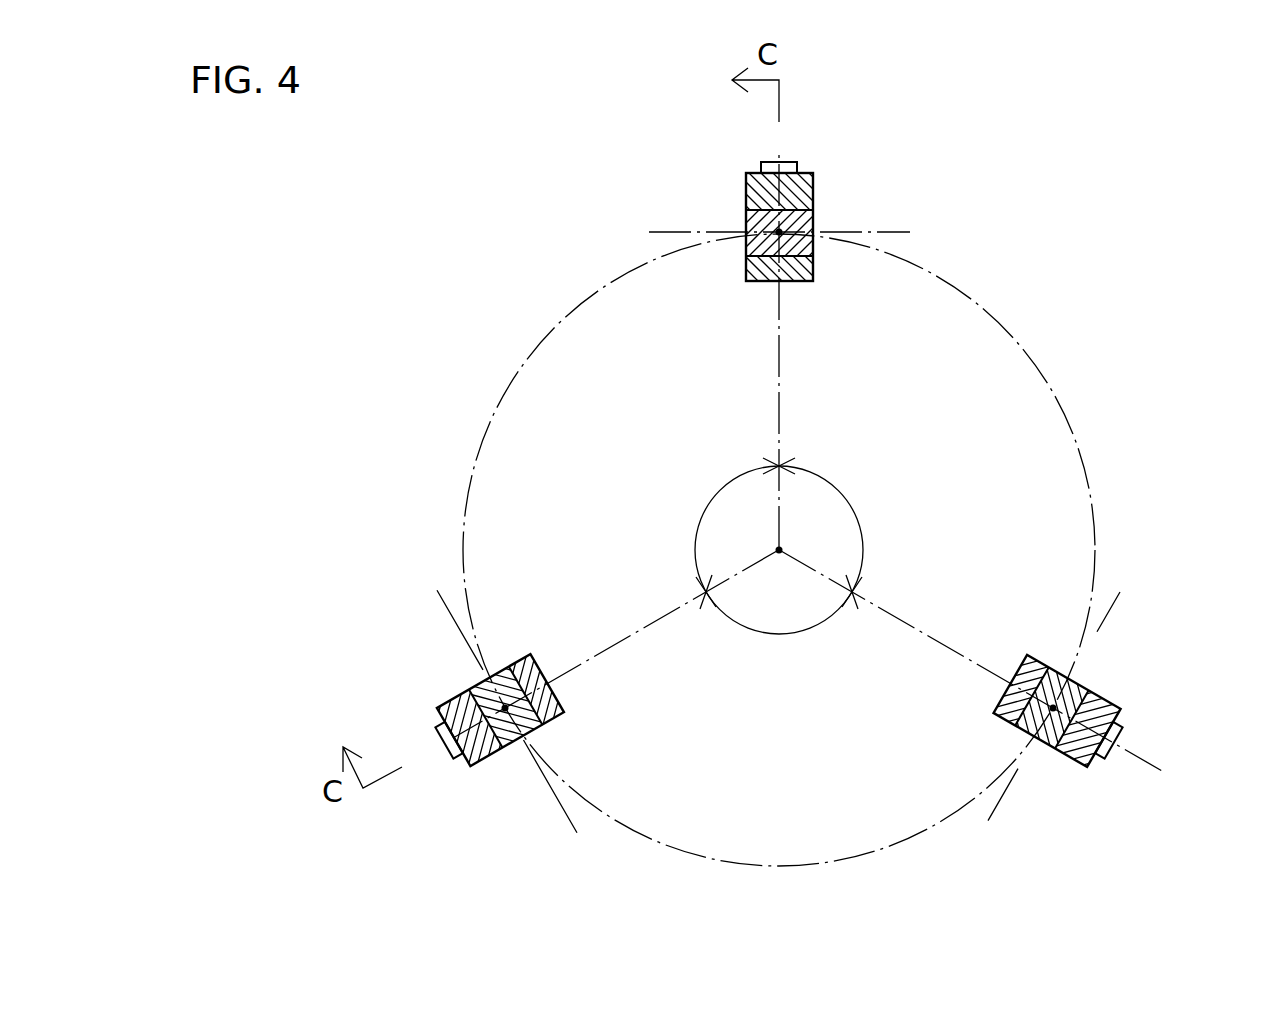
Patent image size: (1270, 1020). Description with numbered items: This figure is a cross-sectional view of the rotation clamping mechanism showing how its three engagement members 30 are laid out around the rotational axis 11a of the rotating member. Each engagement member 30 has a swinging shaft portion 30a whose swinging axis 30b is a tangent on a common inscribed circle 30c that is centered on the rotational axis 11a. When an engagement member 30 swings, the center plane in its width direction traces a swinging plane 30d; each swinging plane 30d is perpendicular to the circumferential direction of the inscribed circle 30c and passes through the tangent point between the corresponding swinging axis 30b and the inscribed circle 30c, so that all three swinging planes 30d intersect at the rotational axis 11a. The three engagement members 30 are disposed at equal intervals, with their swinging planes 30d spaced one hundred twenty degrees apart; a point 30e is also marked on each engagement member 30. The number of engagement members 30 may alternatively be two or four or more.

The rotational axis 11a is at (782, 550).
The engagement member 30 is at (742, 190).
The swinging shaft portion 30a is at (746, 213).
The swinging axis 30b is at (858, 232).
The inscribed circle 30c is at (558, 322).
The swinging plane 30d is at (781, 372).
The magnet center 30e is at (779, 232).